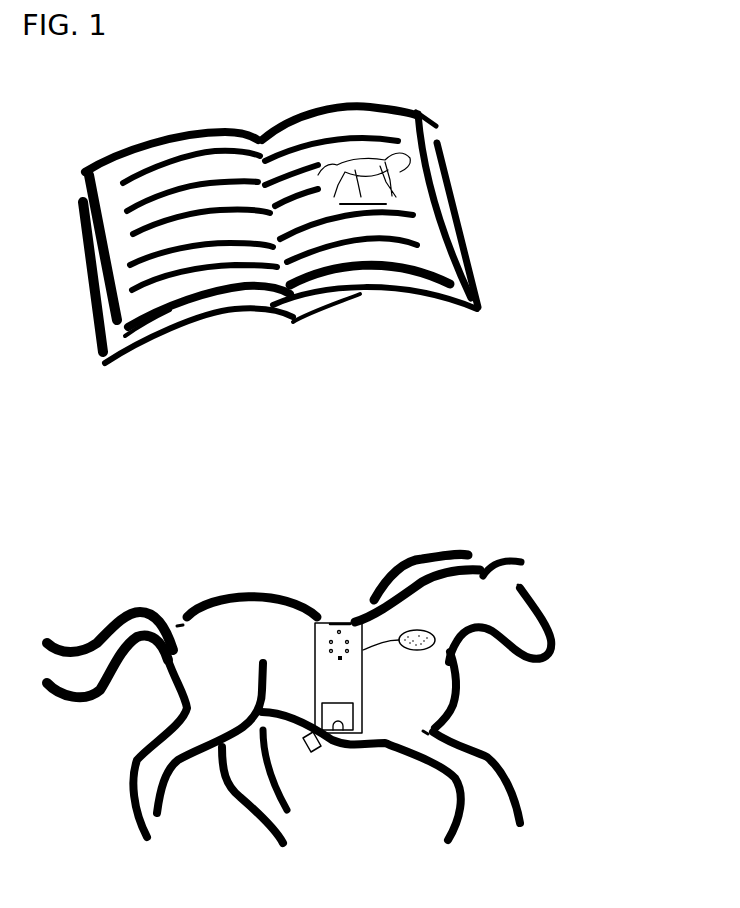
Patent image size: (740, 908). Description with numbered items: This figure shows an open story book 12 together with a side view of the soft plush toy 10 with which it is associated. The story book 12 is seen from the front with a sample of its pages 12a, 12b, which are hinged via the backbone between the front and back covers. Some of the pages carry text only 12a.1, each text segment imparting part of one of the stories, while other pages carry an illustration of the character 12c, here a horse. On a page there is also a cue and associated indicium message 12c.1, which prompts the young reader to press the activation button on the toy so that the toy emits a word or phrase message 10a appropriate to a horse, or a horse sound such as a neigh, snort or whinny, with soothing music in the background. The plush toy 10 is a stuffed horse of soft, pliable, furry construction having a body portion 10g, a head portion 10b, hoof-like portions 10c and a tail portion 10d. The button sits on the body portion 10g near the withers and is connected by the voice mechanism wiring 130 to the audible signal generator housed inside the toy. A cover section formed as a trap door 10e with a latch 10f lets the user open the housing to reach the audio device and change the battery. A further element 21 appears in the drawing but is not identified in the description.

The soft plush toy 10 is at (250, 590).
The word or phrase message 10a is at (440, 637).
The head portion 10b is at (493, 593).
The hoof-like portions 10c is at (157, 827).
The tail portion 10d is at (80, 703).
The trap door 10e is at (317, 753).
The latch 10f is at (340, 753).
The body portion 10g is at (280, 643).
The story book 12 is at (88, 165).
The page 12a is at (203, 328).
The text 12a.1 is at (173, 180).
The page 12b is at (410, 290).
The illustration of the character 12c is at (373, 177).
The indicium message 12c.1 is at (430, 127).
The voice mechanism wiring 130 is at (372, 618).
The sensor 21 is at (405, 650).